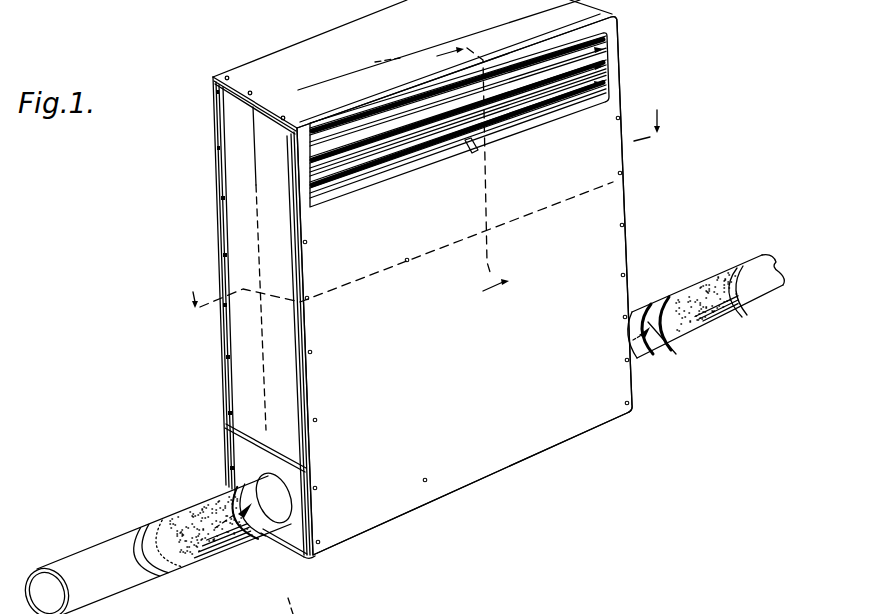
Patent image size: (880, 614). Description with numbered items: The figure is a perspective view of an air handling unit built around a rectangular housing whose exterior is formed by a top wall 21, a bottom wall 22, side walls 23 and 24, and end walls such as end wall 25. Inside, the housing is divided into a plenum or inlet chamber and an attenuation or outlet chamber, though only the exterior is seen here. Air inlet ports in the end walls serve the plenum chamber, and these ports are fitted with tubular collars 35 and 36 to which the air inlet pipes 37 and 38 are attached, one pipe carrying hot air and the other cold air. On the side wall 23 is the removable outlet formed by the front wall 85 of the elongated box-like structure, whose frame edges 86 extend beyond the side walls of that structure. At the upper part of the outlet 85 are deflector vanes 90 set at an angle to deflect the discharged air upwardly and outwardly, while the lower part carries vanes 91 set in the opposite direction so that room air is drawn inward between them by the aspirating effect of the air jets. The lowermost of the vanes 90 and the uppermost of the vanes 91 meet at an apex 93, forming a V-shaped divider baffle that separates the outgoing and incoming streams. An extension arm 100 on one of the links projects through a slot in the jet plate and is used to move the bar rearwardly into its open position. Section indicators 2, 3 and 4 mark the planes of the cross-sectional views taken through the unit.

The top wall 21 is at (285, 68).
The bottom wall 22 is at (287, 546).
The side wall 23 is at (397, 511).
The side wall 24 is at (214, 351).
The end wall 25 is at (246, 391).
The tubular collar 35 is at (279, 490).
The tubular collar 36 is at (636, 358).
The air inlet pipe 37 is at (250, 484).
The air inlet pipe 38 is at (685, 298).
The front wall 85 is at (345, 208).
The frame edges 86 is at (396, 101).
The deflector vanes 90 is at (602, 50).
The vanes 91 is at (610, 88).
The apex 93 is at (530, 107).
The extension arm 100 is at (473, 156).
The section line 2- 2 is at (442, 174).
The section line 3- 3 is at (422, 199).
The section line 4- 4 is at (482, 468).